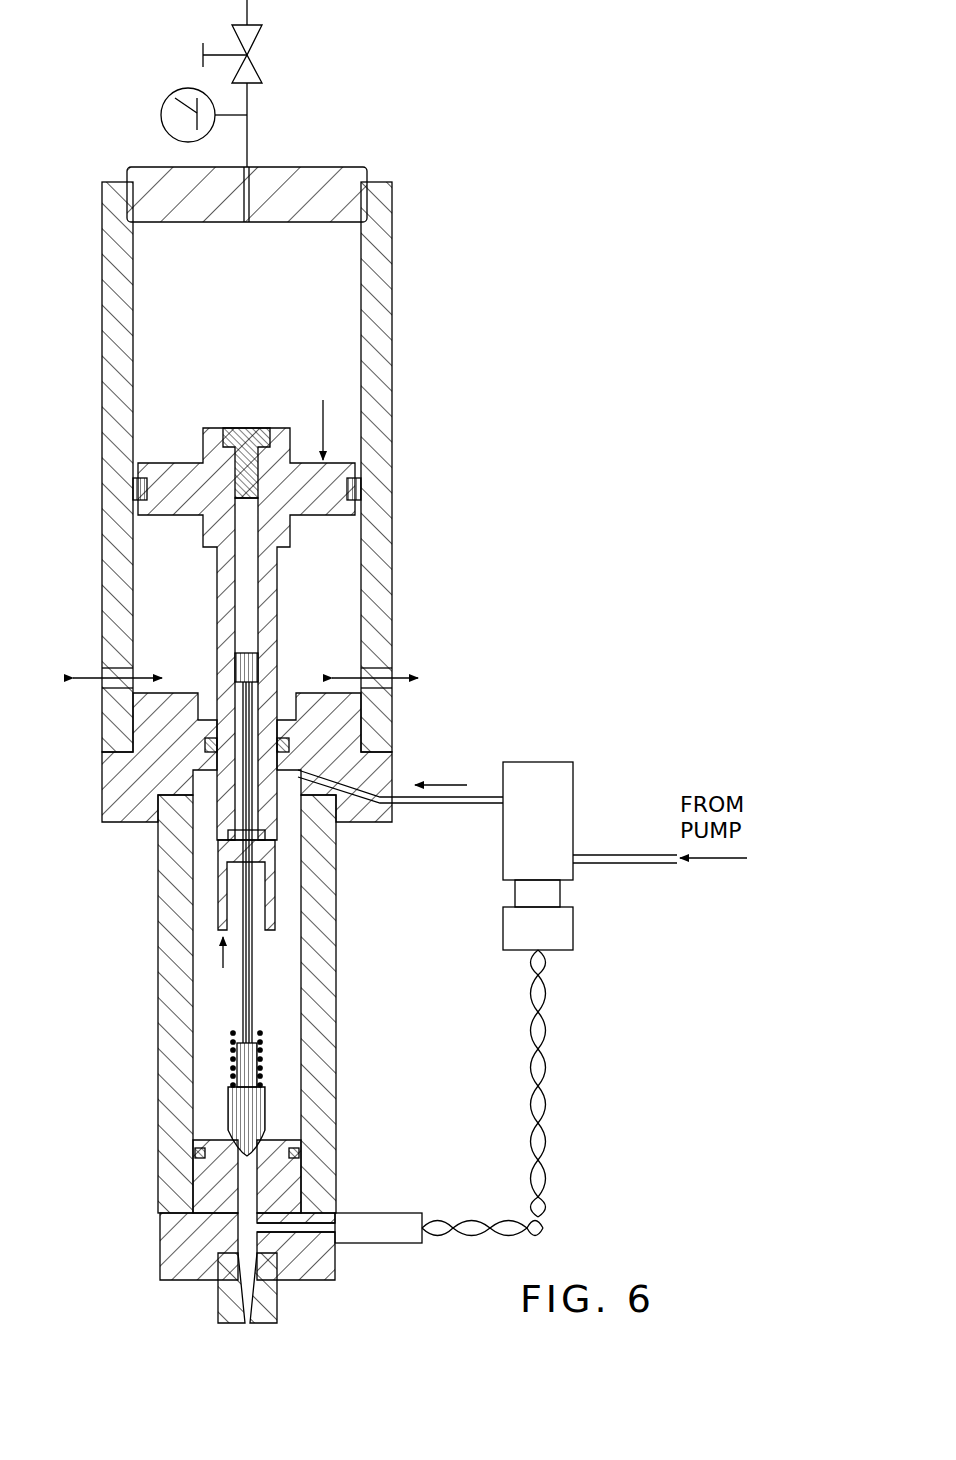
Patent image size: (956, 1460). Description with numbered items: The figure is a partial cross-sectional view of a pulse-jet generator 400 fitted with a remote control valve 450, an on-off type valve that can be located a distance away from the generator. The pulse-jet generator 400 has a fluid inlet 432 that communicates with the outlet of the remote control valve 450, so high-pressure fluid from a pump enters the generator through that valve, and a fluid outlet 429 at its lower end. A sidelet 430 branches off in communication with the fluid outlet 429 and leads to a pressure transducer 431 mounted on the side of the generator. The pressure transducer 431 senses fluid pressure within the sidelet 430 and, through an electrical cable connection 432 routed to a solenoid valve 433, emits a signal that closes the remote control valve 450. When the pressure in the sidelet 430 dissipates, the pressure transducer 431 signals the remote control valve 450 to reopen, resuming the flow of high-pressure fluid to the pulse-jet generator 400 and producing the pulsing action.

The pulse-jet generator 400 is at (477, 107).
The fluid outlet 429 is at (250, 1212).
The sidelet 430 is at (300, 1232).
The pressure transducer 431 is at (390, 1232).
The fluid inlet 432 is at (365, 803).
The solenoid valve 433 is at (573, 927).
The remote control valve 450 is at (577, 728).